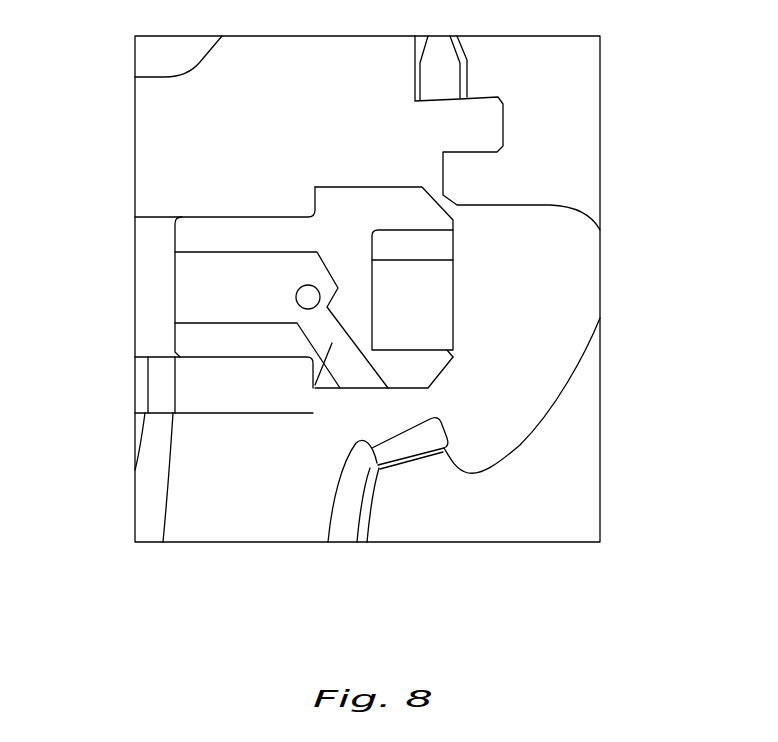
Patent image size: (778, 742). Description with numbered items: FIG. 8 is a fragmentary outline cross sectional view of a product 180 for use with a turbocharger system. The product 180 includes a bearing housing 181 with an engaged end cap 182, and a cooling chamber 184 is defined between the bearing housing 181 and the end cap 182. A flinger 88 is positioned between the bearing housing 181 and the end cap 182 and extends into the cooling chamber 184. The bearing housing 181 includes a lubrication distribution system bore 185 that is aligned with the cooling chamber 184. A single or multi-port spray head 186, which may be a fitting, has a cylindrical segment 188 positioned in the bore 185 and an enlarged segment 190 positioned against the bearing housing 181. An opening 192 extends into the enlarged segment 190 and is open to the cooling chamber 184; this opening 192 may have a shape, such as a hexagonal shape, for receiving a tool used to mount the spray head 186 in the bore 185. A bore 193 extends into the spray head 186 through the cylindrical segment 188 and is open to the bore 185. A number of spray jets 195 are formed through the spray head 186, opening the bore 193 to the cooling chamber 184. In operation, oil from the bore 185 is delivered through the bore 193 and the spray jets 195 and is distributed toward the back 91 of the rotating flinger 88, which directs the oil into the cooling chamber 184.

The product 180 is at (610, 207).
The bearing housing 181 is at (281, 130).
The end cap 182 is at (578, 94).
The cooling chamber 184 is at (545, 332).
The lubrication distribution system bore 185 is at (147, 287).
The spray head 186 is at (377, 227).
The cylindrical segment 188 is at (238, 337).
The enlarged segment 190 is at (415, 363).
The opening 192 is at (413, 310).
The bore 193 is at (257, 292).
The spray jets 195 is at (310, 307).
The back 91 is at (360, 440).
The flinger 88 is at (378, 466).